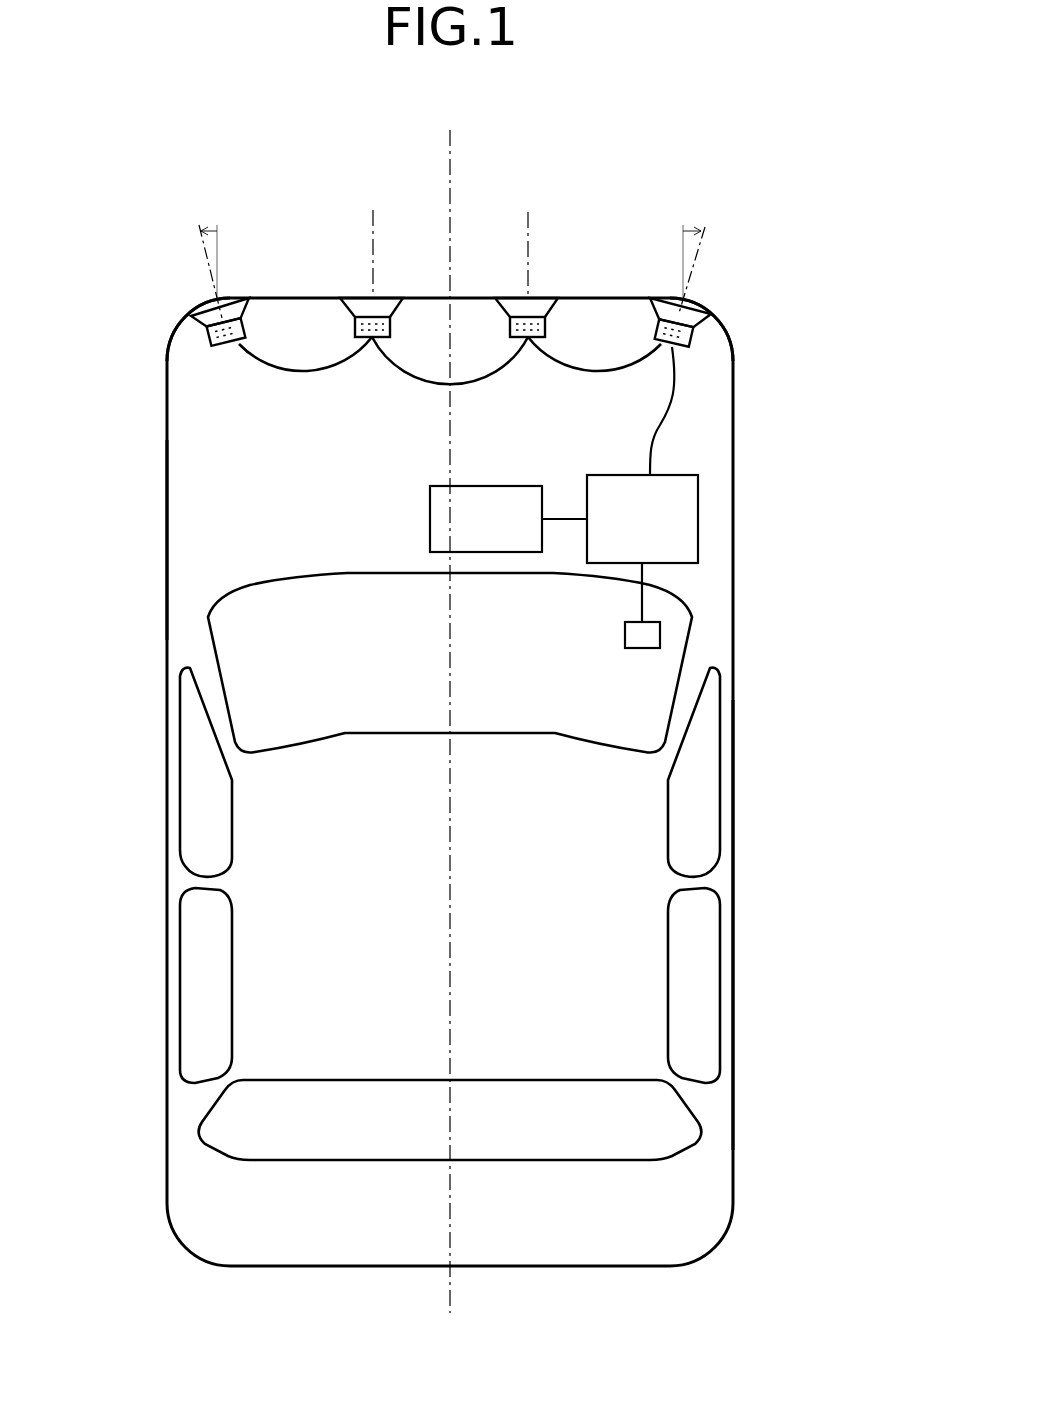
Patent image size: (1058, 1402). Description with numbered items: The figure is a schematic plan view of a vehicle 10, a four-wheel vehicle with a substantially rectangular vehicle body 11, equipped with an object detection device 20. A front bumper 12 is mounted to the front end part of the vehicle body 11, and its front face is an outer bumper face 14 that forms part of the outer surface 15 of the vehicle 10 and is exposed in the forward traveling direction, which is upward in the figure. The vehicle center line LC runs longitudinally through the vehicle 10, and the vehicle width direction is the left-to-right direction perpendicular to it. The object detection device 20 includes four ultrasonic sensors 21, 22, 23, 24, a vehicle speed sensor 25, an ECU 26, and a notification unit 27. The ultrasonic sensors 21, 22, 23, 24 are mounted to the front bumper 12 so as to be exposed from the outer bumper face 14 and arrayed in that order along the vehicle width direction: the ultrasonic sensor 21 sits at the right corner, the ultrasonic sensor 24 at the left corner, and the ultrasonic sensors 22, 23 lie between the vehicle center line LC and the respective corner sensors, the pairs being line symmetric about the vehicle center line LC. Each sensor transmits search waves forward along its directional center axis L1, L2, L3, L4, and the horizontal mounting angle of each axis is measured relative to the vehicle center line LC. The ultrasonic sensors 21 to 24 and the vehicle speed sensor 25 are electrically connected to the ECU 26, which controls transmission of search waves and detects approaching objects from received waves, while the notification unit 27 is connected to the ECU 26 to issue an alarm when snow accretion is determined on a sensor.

The vehicle 10 is at (778, 800).
The vehicle body 11 is at (720, 868).
The front bumper 12 is at (728, 338).
The outer bumper face 14 is at (173, 338).
The outer surface 15 is at (733, 970).
The object detection device 20 is at (270, 502).
The ultrasonic sensor 21 is at (695, 313).
The ultrasonic sensor 22 is at (540, 303).
The ultrasonic sensor 23 is at (385, 305).
The ultrasonic sensor 24 is at (207, 313).
The vehicle speed sensor 25 is at (650, 635).
The ECU 26 is at (698, 512).
The notification unit 27 is at (490, 486).
The directional center axis L1 is at (708, 237).
The directional center axis L2 is at (530, 225).
The directional center axis L3 is at (372, 227).
The directional center axis L4 is at (197, 237).
The vehicle center line LC is at (450, 148).